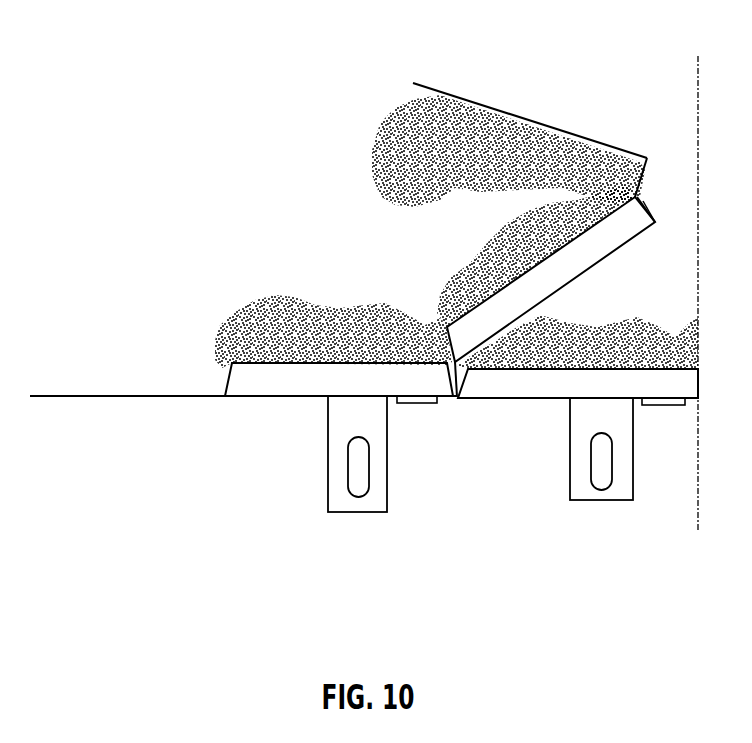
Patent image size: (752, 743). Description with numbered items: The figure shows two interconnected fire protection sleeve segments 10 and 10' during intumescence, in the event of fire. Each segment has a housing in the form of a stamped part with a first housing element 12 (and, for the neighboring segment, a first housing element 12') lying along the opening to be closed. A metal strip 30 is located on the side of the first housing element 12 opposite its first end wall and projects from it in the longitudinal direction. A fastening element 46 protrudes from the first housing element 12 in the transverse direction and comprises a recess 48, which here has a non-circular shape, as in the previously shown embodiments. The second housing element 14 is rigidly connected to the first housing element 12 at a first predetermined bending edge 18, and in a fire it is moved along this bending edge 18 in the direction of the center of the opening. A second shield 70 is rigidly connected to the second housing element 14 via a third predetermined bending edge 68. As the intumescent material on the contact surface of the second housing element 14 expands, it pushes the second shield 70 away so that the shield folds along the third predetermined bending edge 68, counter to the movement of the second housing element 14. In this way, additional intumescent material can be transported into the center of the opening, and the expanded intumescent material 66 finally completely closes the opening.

The fire protection sleeve segment 10 is at (243, 488).
The fire protection sleeve segment 10' is at (578, 497).
The first housing element 12 is at (339, 426).
The first housing element 12' is at (578, 434).
The second housing element 14 is at (590, 272).
The first predetermined bending edge 18 is at (462, 367).
The metal strip 30 is at (92, 398).
The fastening element 46 is at (338, 504).
The recess 48 is at (358, 483).
The expanded intumescent material 66 is at (402, 167).
The third predetermined bending edge 68 is at (642, 200).
The second shield 70 is at (533, 121).